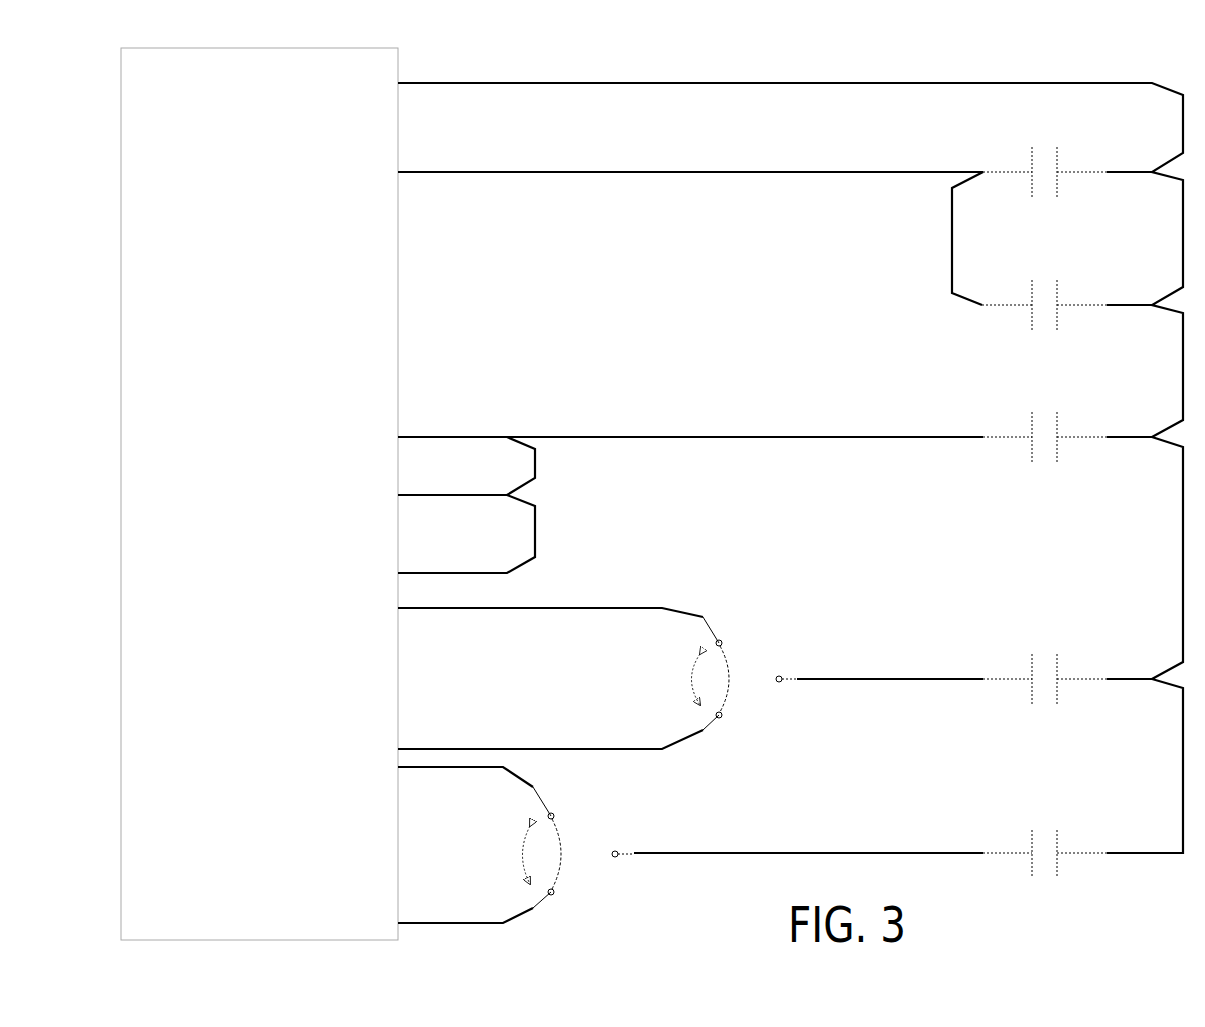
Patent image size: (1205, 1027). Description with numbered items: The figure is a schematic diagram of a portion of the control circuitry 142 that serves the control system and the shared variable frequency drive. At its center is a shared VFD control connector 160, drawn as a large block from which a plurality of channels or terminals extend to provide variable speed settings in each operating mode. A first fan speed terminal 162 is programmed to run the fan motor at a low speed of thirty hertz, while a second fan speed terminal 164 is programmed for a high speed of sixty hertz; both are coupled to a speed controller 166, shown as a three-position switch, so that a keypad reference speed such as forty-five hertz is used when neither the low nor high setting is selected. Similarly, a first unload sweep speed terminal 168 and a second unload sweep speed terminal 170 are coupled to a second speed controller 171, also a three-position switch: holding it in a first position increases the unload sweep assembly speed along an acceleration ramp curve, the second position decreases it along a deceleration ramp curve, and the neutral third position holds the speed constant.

The control circuitry 142 is at (871, 45).
The shared VFD control connector 160 is at (399, 252).
The first fan speed terminal 162 is at (398, 608).
The second fan speed terminal 164 is at (398, 749).
The speed controller 166 is at (787, 638).
The first unload sweep speed terminal 168 is at (398, 767).
The second unload sweep speed terminal 170 is at (398, 923).
The speed controller 171 is at (622, 821).